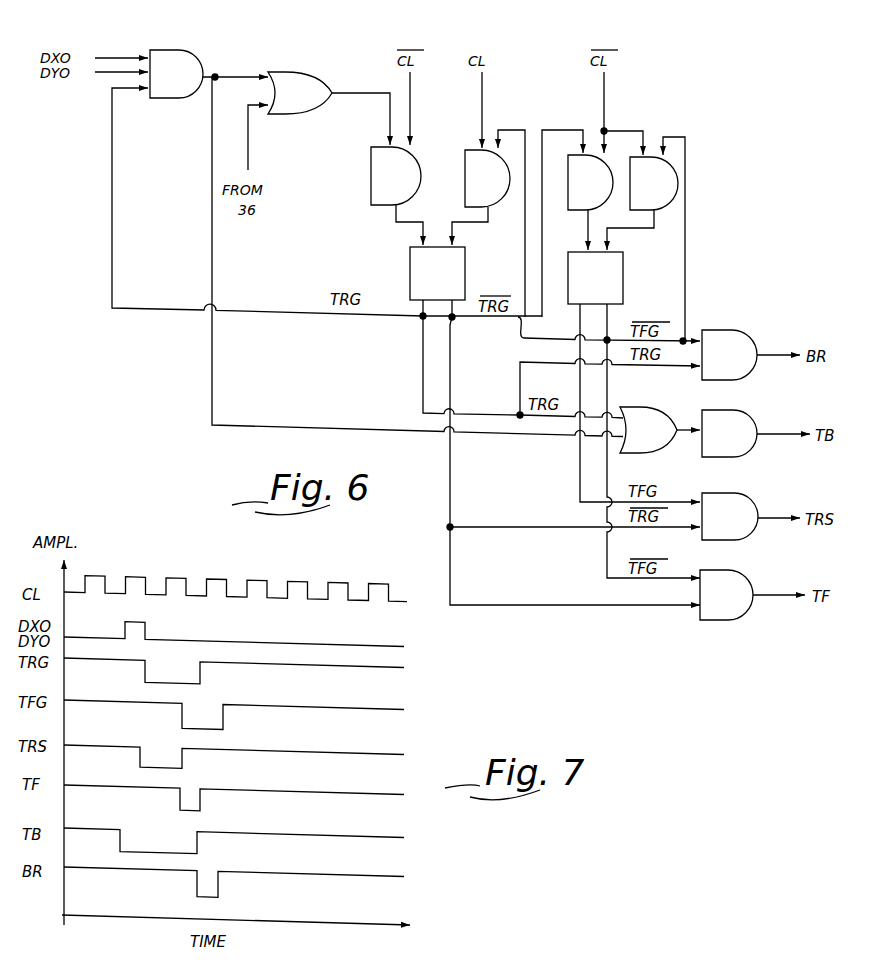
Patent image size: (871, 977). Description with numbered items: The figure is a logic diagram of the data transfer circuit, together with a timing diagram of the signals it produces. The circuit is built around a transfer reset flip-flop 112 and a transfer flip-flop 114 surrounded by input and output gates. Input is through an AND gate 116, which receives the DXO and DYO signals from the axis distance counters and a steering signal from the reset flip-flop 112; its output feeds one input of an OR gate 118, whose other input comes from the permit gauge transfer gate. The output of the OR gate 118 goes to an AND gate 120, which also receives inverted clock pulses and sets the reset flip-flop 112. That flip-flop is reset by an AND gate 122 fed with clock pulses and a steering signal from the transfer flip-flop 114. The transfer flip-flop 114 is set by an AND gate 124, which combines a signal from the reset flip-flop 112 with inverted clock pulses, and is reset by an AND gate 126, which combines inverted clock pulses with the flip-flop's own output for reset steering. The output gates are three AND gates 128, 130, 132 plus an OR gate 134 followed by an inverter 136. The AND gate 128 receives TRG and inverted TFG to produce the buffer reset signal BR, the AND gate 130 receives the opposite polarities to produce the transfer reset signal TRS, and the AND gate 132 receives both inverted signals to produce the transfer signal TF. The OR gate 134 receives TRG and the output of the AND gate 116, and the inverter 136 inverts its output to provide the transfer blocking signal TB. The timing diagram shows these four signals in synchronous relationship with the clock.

The transfer reset flip-flop 112 is at (410, 272).
The transfer flip-flop 114 is at (623, 286).
The AND gate 116 is at (168, 50).
The OR gate 118 is at (337, 52).
The AND gate 120 is at (371, 172).
The AND gate 122 is at (466, 128).
The AND gate 124 is at (575, 208).
The AND gate 126 is at (676, 203).
The AND gate 128 is at (734, 330).
The AND gate 130 is at (736, 494).
The AND gate 132 is at (733, 571).
The OR gate 134 is at (628, 407).
The inverter 136 is at (740, 411).